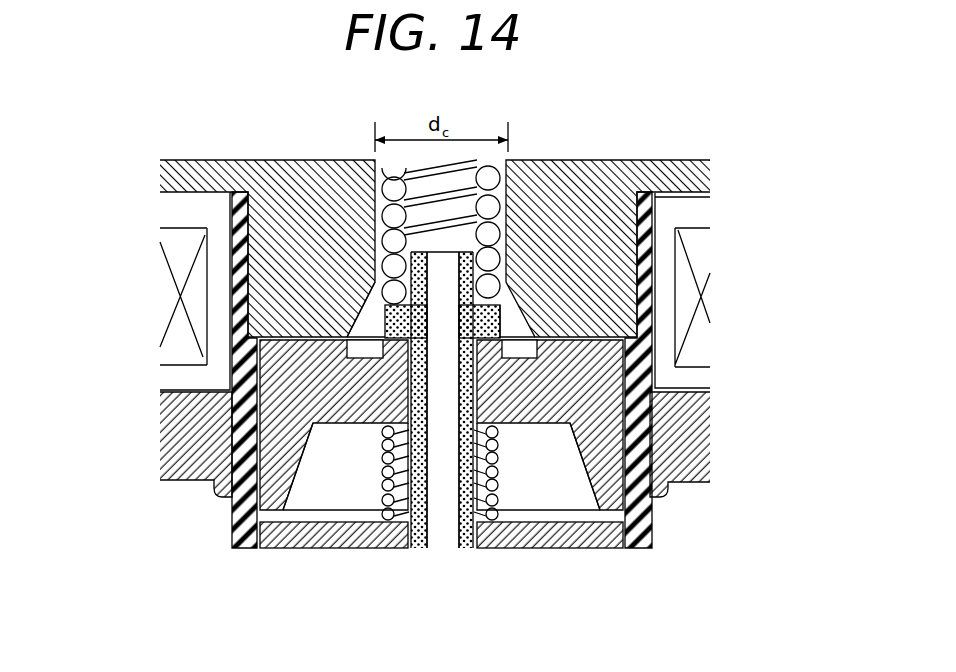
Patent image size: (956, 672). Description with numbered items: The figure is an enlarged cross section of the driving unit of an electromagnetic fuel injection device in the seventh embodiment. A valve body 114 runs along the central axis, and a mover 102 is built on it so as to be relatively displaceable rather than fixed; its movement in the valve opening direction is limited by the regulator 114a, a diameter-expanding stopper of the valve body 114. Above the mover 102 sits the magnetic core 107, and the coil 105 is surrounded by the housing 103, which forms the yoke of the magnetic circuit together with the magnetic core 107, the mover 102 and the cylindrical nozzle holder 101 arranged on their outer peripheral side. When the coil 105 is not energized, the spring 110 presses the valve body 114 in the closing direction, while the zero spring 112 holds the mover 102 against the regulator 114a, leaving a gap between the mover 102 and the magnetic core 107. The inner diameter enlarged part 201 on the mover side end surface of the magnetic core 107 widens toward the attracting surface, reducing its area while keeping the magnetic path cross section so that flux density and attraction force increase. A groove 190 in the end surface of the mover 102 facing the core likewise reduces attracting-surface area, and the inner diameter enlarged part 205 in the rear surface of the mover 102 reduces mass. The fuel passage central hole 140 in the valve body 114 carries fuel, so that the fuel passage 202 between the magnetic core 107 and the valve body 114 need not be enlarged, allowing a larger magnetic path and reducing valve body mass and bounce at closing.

The nozzle holder 101 is at (240, 528).
The mover 102 is at (316, 397).
The housing 103 is at (178, 439).
The coil 105 is at (180, 352).
The magnetic core 107 is at (287, 195).
The spring 110 is at (488, 206).
The zero spring 112 is at (494, 500).
The valve body 114 is at (418, 532).
The regulator 114a is at (487, 318).
The fuel passage central hole 140 is at (427, 522).
The groove 190 is at (518, 362).
The inner diameter enlarged part 201 is at (370, 288).
The fuel passage 202 is at (518, 318).
The inner diameter enlarged part 205 is at (578, 472).